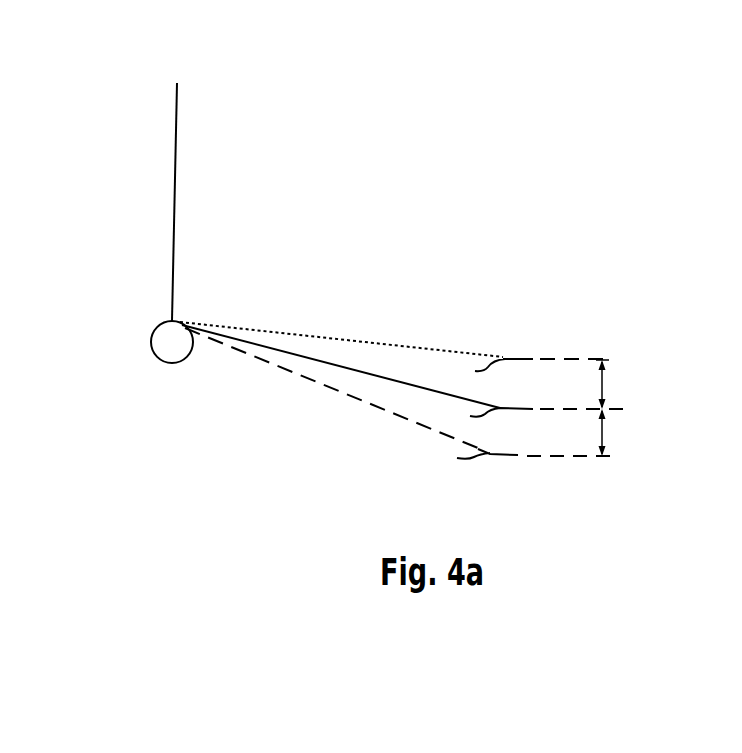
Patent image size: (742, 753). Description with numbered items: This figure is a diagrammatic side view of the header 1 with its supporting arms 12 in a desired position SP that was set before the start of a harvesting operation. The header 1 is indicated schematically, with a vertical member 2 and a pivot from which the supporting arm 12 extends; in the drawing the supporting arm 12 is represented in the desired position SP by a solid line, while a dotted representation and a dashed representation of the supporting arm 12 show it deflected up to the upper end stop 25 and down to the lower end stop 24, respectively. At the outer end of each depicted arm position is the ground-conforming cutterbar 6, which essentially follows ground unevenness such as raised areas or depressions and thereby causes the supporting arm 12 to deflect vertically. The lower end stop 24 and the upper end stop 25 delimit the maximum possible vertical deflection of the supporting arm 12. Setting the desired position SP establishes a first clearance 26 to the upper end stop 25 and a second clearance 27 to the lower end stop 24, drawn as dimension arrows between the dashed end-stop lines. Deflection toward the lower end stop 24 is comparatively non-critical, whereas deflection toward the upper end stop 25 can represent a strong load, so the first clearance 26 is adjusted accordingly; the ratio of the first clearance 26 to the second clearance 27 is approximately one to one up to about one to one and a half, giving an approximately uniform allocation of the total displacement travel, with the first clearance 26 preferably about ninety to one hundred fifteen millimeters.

The header 1 is at (365, 104).
The tower 2 is at (168, 137).
The cutterbar 6 is at (524, 349).
The supporting arm 12 is at (347, 340).
The lower end stop 24 is at (565, 458).
The upper end stop 25 is at (567, 357).
The first clearance 26 is at (607, 382).
The second clearance 27 is at (607, 436).
The desired position SP is at (608, 409).